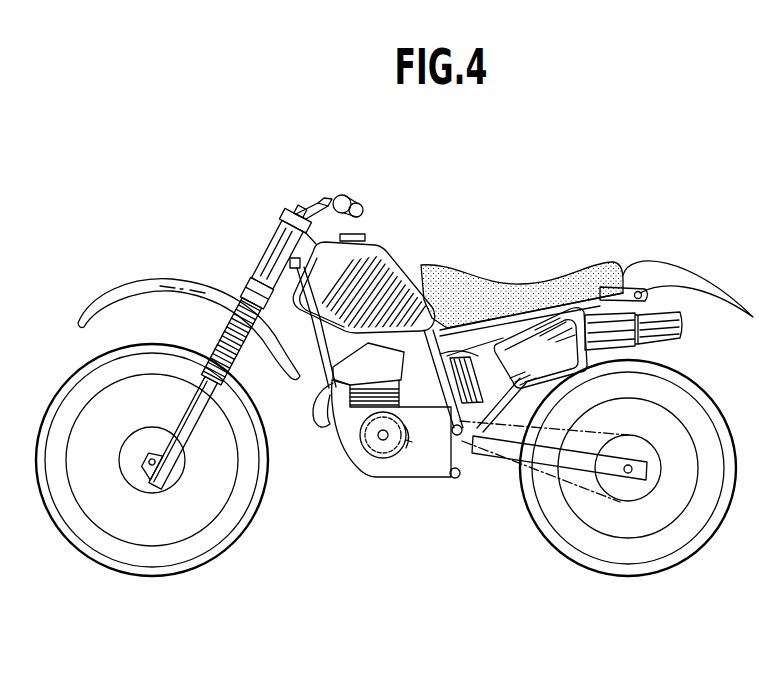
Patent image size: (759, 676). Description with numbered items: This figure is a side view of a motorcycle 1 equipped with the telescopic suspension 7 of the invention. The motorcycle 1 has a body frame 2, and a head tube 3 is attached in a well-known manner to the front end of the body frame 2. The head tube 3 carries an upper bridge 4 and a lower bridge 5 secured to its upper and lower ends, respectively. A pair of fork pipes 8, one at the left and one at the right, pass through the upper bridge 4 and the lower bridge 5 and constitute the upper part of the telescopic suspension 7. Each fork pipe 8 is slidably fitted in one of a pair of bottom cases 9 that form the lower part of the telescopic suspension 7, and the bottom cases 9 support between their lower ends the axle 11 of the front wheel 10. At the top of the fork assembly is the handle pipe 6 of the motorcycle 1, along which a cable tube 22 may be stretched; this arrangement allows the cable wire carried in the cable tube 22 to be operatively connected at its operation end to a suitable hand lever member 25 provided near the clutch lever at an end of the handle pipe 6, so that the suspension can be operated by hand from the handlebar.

The motorcycle 1 is at (531, 273).
The body frame 2 is at (417, 479).
The head tube 3 is at (309, 260).
The upper bridge 4 is at (287, 218).
The lower bridge 5 is at (262, 283).
The handle pipe 6 is at (323, 203).
The telescopic suspension 7 is at (221, 333).
The fork pipes 8 is at (278, 242).
The bottom cases 9 is at (190, 405).
The front wheel 10 is at (62, 400).
The axle 11 is at (147, 462).
The cable tube 22 is at (306, 211).
The hand lever member 25 is at (360, 212).